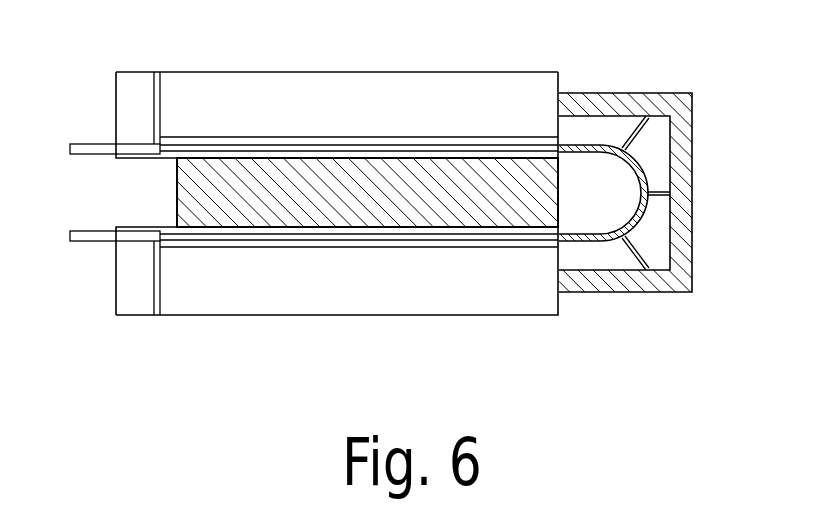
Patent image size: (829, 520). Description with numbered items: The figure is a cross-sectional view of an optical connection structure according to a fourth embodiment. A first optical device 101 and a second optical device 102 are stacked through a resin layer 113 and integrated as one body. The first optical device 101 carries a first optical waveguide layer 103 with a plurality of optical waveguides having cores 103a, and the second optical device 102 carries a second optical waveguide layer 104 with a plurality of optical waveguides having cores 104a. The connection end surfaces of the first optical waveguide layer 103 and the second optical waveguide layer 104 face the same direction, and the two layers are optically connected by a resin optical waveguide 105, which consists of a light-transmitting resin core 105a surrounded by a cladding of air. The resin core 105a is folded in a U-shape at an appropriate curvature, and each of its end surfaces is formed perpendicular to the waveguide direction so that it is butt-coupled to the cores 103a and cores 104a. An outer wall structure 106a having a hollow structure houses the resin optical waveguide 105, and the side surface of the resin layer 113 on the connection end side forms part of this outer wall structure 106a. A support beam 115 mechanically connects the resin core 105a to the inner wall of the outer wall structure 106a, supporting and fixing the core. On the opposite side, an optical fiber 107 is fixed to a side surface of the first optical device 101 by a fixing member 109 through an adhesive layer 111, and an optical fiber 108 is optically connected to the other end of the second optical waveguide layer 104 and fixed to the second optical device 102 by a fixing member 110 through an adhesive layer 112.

The first optical device 101 is at (427, 315).
The second optical device 102 is at (427, 72).
The first optical waveguide layer 103 is at (350, 247).
The cores 103a is at (501, 240).
The second optical waveguide layer 104 is at (353, 137).
The cores 104a is at (501, 151).
The resin optical waveguide 105 is at (583, 136).
The resin core 105a is at (598, 152).
The outer wall structure 106a is at (692, 243).
The optical fiber 107 is at (92, 241).
The optical fiber 108 is at (92, 144).
The fixing member 109 is at (116, 304).
The fixing member 110 is at (116, 82).
The adhesive layer 111 is at (157, 315).
The adhesive layer 112 is at (157, 72).
The resin layer 113 is at (548, 215).
The support beam 115 is at (636, 116).